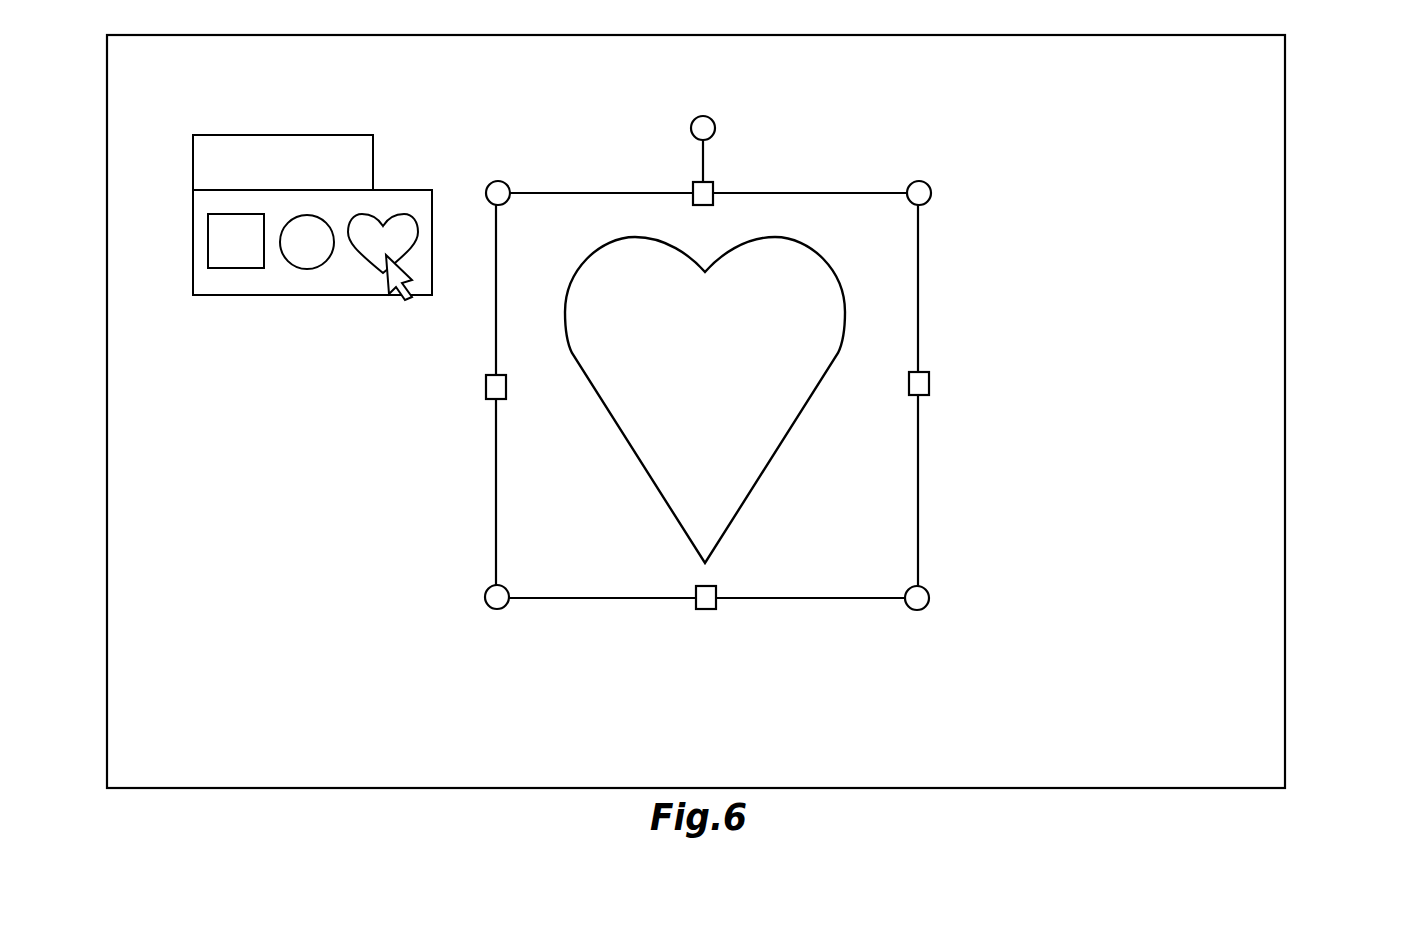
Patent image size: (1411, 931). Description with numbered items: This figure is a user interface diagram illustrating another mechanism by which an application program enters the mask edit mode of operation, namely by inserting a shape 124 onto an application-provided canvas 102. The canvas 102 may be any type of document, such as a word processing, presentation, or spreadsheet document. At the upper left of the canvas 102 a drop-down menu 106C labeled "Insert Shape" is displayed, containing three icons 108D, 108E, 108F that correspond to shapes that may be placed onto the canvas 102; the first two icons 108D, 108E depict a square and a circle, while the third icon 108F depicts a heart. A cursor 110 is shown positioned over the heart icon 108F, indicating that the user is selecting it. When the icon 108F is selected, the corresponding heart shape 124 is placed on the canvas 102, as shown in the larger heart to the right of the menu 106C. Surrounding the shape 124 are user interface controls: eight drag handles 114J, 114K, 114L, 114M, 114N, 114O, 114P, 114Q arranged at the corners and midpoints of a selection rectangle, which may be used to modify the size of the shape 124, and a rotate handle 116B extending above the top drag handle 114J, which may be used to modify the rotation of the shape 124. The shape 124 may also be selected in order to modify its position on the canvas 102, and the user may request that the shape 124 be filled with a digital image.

The canvas 102 is at (1270, 107).
The drop-down menu 106C is at (192, 221).
The icon 108D is at (238, 258).
The icon 108E is at (307, 258).
The icon 108F is at (378, 263).
The cursor 110 is at (403, 300).
The drag handle 114J is at (705, 192).
The drag handle 114K is at (922, 188).
The drag handle 114L is at (930, 382).
The drag handle 114M is at (930, 598).
The drag handle 114N is at (705, 607).
The drag handle 114O is at (500, 603).
The drag handle 114P is at (485, 387).
The drag handle 114Q is at (495, 182).
The rotate handle 116B is at (708, 122).
The shape 124 is at (762, 473).